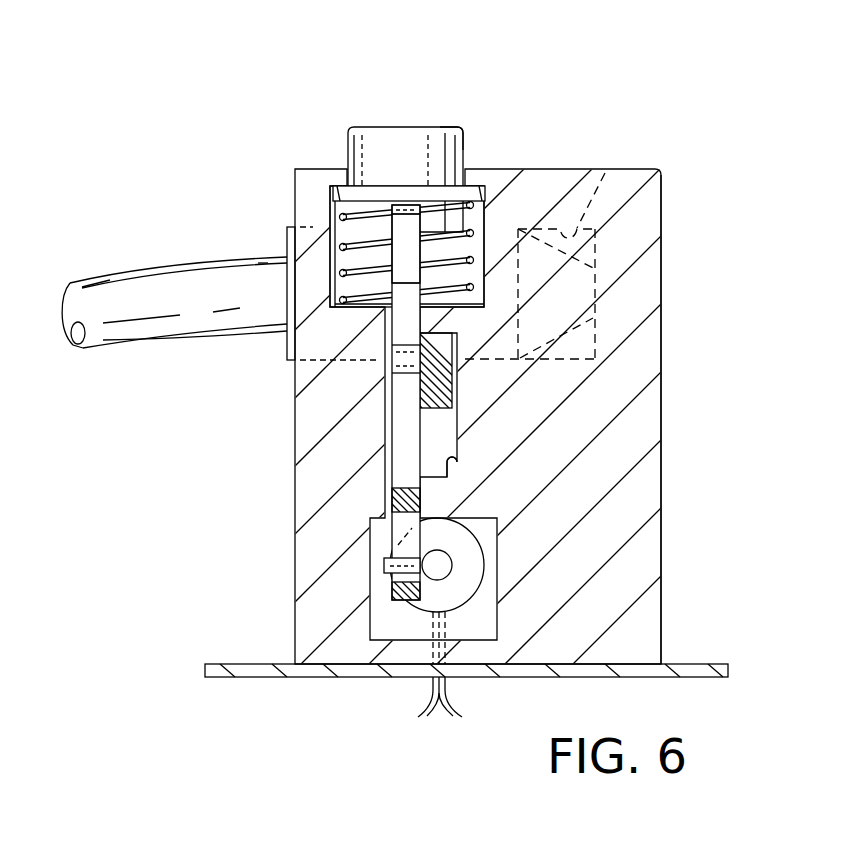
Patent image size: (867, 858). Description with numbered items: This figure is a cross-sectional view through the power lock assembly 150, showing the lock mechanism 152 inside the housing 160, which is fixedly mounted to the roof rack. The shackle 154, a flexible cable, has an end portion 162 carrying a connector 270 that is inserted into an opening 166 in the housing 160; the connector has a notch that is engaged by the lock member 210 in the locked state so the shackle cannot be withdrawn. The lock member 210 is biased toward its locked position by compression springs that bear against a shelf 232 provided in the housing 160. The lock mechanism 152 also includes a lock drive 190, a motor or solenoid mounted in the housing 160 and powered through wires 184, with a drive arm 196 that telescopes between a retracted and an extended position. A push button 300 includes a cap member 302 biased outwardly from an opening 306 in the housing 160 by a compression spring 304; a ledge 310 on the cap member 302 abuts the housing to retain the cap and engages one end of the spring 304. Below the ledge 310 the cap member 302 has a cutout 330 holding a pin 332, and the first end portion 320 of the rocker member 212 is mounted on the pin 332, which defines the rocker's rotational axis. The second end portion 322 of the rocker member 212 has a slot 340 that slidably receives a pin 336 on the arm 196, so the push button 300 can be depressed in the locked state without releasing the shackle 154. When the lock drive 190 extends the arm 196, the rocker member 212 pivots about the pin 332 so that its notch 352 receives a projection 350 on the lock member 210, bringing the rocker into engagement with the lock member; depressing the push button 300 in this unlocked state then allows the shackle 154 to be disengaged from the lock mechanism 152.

The power lock assembly 150 is at (625, 122).
The lock mechanism 152 is at (332, 403).
The shackle 154 is at (127, 275).
The housing 160 is at (650, 228).
The end portion of shackle 162 is at (502, 237).
The opening 166 is at (613, 160).
The wires 184 is at (437, 722).
The lock drive 190 is at (487, 568).
The arm 196 is at (443, 562).
The lock member 210 is at (452, 385).
The rocker member 212 is at (390, 433).
The shelf 232 is at (447, 462).
The connector 270 is at (283, 227).
The push button 300 is at (437, 127).
The cap member 302 is at (453, 132).
The compression spring 304 is at (340, 247).
The opening 306 is at (480, 297).
The ledge 310 is at (372, 193).
The first end portion of rocker member 320 is at (340, 216).
The second end portion of rocker member 322 is at (393, 590).
The cutout 330 is at (415, 212).
The pin 332 is at (388, 212).
The pin 336 is at (388, 568).
The slot 340 is at (393, 532).
The projection 350 is at (385, 348).
The notch 352 is at (398, 375).